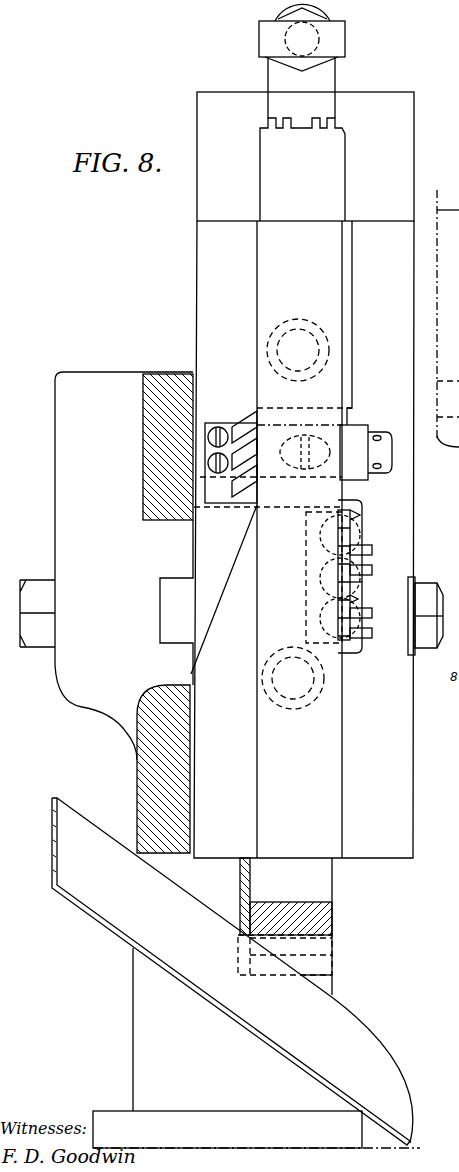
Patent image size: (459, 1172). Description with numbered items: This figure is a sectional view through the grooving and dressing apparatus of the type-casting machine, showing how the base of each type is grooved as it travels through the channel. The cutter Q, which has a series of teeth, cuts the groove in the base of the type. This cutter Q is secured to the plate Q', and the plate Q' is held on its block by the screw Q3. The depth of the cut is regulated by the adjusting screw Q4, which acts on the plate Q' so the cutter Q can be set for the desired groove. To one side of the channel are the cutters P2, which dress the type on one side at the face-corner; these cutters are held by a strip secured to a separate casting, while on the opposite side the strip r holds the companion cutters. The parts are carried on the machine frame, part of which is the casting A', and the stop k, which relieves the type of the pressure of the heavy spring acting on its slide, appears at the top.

The stop k is at (302, 37).
The casting A' is at (106, 612).
The cutter Q is at (231, 453).
The plate Q' is at (354, 452).
The screw Q3 is at (302, 462).
The screw Q4 is at (382, 443).
The cutters P2 is at (357, 542).
The strip r is at (362, 582).